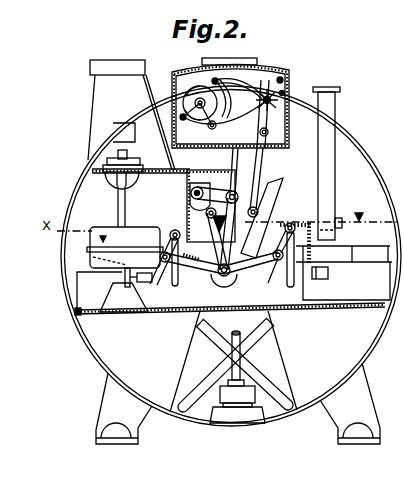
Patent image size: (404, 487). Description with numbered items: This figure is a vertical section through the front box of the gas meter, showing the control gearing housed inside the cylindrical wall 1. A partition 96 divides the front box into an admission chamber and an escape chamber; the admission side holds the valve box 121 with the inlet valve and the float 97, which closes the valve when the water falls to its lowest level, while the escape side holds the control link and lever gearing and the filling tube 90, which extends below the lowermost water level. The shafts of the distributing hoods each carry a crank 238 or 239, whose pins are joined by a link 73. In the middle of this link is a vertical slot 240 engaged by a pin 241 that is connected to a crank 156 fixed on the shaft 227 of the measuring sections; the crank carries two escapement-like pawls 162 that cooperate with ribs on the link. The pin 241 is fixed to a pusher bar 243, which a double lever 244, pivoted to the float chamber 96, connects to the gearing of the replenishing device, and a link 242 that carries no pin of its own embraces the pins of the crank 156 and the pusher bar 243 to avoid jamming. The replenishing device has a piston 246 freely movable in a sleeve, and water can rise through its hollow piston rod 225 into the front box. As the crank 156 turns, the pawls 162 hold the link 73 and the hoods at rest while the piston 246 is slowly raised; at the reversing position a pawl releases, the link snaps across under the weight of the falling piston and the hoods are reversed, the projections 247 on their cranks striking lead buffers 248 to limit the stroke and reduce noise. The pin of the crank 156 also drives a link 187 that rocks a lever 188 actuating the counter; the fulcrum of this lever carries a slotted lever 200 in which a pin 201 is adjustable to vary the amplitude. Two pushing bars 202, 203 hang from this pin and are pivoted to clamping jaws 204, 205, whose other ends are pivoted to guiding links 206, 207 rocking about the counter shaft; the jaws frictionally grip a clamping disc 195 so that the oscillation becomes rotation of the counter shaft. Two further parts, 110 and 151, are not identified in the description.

The cylindrical wall 1 is at (88, 347).
The link 73 is at (164, 263).
The filling tube 90 is at (340, 90).
The partition 96 is at (187, 182).
The float 97 is at (125, 247).
The floor plate 110 is at (313, 308).
The valve box 121 is at (136, 133).
The tappet rod 151 is at (191, 262).
The crank 156 is at (199, 189).
The pawls 162 is at (216, 281).
The link 187 is at (257, 206).
The lever 188 is at (262, 155).
The clamping disc 195 is at (197, 102).
The slotted lever 200 is at (267, 96).
The pin 201 is at (284, 93).
The pushing bar 202 is at (219, 79).
The pushing bar 203 is at (282, 79).
The clamping jaw 204 is at (222, 104).
The clamping jaw 205 is at (184, 121).
The guiding link 206 is at (212, 129).
The guiding link 207 is at (178, 97).
The hollow piston rod 225 is at (232, 356).
The shaft 227 is at (282, 181).
The crank 238 is at (175, 230).
The crank 239 is at (294, 284).
The vertical slot 240 is at (226, 283).
The pin 241 is at (233, 272).
The link 242 is at (209, 239).
The pusher bar 243 is at (243, 189).
The double lever 244 is at (233, 156).
The piston 246 is at (228, 401).
The projections 247 is at (277, 264).
The buffers 248 is at (124, 278).